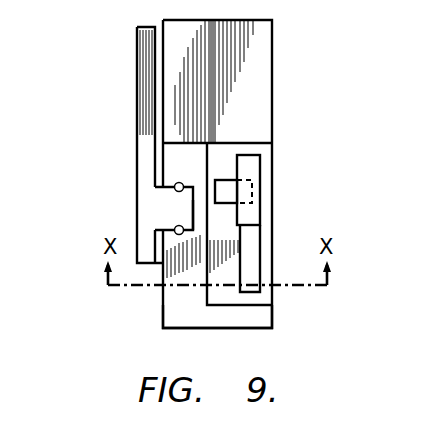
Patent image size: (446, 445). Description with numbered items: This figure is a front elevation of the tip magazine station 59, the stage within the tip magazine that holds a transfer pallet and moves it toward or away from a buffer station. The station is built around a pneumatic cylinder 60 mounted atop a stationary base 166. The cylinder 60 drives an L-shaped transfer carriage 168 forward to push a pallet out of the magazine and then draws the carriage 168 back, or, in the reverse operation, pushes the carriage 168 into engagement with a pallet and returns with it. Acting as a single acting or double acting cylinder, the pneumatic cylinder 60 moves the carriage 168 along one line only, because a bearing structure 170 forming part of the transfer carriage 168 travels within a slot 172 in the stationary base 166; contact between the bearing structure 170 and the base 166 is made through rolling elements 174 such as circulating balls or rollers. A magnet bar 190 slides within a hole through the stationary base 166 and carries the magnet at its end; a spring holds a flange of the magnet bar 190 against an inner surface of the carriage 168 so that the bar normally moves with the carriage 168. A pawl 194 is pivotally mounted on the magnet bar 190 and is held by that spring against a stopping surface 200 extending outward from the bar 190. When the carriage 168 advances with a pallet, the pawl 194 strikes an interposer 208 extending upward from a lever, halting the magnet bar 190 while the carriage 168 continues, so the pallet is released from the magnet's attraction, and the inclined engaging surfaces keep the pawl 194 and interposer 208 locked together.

The tip magazine station 59 is at (292, 87).
The pneumatic cylinder 60 is at (272, 67).
The stationary base 166 is at (163, 312).
The transfer carriage 168 is at (137, 105).
The bearing structure 170 is at (170, 208).
The slot 172 is at (193, 210).
The rolling elements 174 is at (175, 184).
The magnet bar 190 is at (228, 180).
The pawl 194 is at (260, 218).
The stopping surface 200 is at (258, 192).
The interposer 208 is at (260, 263).